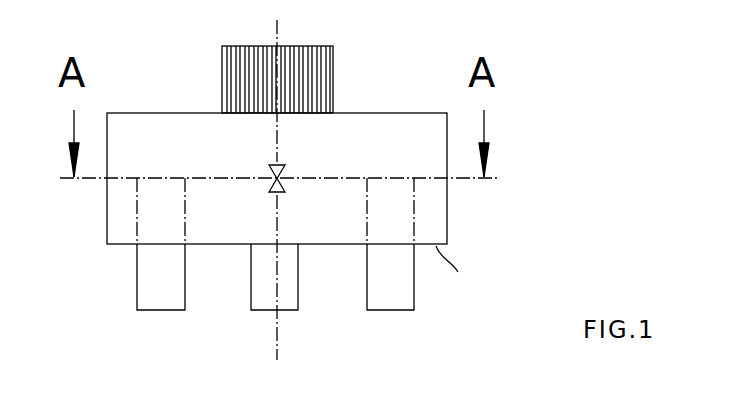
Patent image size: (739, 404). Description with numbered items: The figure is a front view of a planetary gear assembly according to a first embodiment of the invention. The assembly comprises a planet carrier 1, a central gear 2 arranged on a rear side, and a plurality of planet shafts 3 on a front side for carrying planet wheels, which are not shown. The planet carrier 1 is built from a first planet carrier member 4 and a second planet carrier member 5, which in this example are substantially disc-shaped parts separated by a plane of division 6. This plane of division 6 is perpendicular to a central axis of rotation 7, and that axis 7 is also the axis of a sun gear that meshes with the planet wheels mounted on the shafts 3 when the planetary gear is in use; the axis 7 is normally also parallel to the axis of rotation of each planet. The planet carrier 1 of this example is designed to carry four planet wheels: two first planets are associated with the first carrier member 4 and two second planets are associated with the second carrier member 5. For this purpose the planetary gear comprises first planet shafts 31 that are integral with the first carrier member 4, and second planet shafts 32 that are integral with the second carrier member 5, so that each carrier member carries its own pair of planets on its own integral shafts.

The planet carrier 1 is at (483, 222).
The central gear 2 is at (333, 75).
The planet shafts 3 is at (133, 330).
The first planet carrier member 4 is at (413, 120).
The second planet carrier member 5 is at (453, 274).
The plane of division 6 is at (197, 176).
The central axis of rotation 7 is at (277, 338).
The first planet shafts 31 is at (408, 290).
The second planet shafts 32 is at (257, 295).